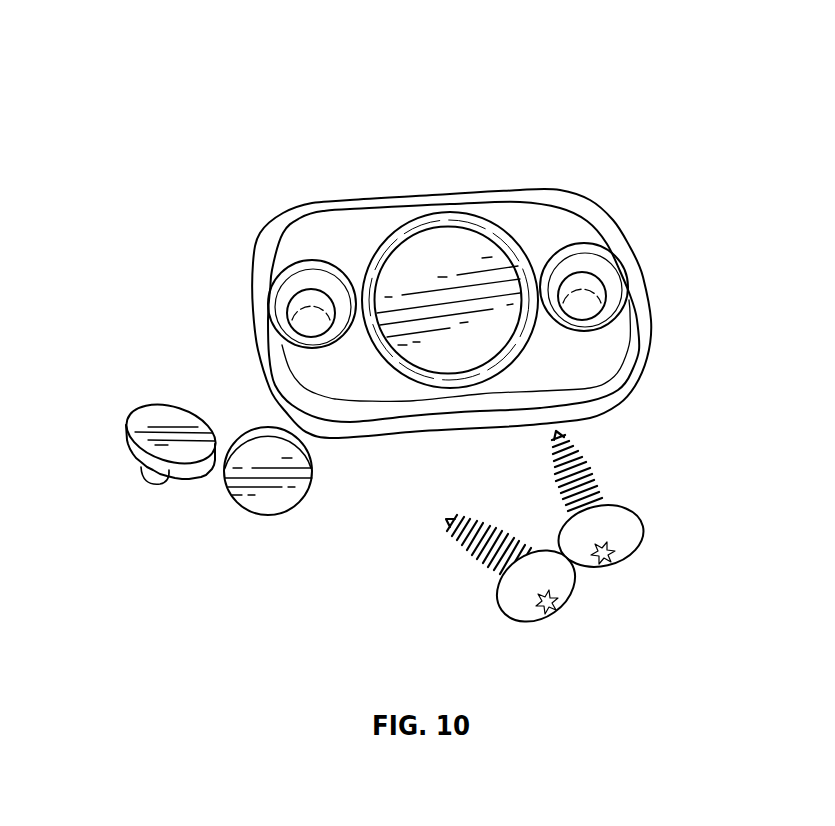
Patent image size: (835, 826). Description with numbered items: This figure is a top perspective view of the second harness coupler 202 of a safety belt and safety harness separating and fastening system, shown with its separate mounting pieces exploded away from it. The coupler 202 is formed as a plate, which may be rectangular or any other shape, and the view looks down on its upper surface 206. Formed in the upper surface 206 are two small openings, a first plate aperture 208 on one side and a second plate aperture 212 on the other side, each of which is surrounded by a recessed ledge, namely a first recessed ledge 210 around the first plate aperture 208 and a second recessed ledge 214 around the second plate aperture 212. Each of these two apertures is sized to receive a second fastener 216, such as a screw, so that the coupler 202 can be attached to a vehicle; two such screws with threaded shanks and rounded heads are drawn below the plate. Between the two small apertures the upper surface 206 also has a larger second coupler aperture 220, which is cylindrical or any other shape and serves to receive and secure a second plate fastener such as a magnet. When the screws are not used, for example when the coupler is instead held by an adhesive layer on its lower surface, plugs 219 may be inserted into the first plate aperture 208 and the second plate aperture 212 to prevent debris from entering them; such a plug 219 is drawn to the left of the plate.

The second harness coupler 202 is at (268, 239).
The upper surface 206 is at (548, 212).
The first plate aperture 208 is at (313, 308).
The first recessed ledge 210 is at (296, 333).
The second plate aperture 212 is at (598, 288).
The second recessed ledge 214 is at (594, 315).
The second fastener 216 is at (521, 612).
The plug 219 is at (160, 449).
The second coupler aperture 220 is at (428, 254).